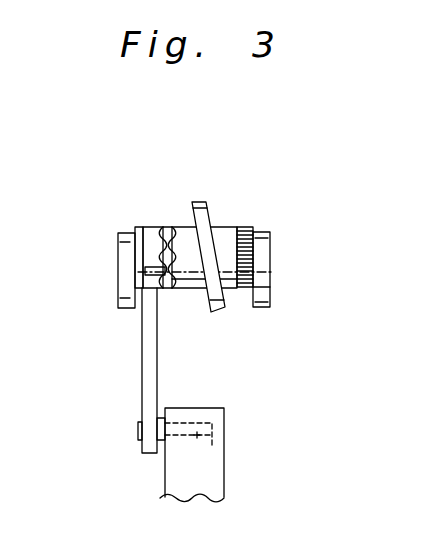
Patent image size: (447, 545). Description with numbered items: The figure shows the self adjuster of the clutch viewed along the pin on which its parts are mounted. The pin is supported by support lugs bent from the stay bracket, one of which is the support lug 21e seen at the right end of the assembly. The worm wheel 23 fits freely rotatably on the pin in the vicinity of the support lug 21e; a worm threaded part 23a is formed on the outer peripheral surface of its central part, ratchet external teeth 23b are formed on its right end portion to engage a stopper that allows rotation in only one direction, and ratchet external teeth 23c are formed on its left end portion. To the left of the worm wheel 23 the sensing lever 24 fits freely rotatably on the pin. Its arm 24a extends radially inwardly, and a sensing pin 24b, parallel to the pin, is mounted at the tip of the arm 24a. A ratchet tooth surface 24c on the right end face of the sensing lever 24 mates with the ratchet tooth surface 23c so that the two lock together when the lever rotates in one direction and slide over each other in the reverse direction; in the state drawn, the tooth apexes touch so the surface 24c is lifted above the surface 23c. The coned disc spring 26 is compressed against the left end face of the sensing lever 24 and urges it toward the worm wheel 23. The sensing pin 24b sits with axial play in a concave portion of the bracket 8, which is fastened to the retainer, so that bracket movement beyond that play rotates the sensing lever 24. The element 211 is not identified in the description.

The bracket 8 is at (210, 476).
The support lug 21e is at (262, 268).
The flange 211 is at (118, 273).
The worm wheel 23 is at (282, 222).
The worm threaded part 23a is at (220, 219).
The ratchet external teeth 23b is at (247, 227).
The ratchet external teeth 23c is at (175, 258).
The sensing lever 24 is at (152, 221).
The arm 24a is at (147, 363).
The sensing pin 24b is at (212, 446).
The ratchet tooth surface 24c is at (160, 290).
The coned disc spring 26 is at (140, 228).